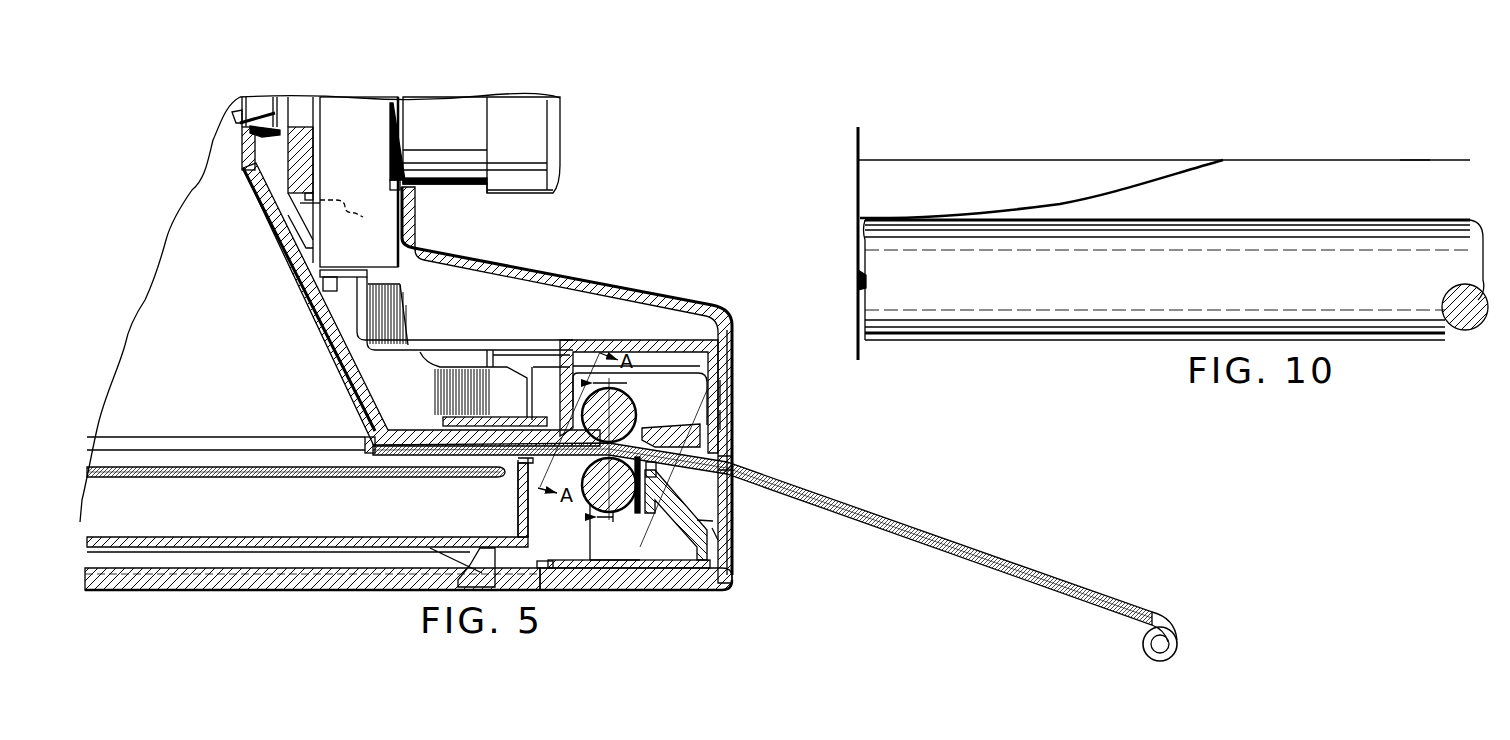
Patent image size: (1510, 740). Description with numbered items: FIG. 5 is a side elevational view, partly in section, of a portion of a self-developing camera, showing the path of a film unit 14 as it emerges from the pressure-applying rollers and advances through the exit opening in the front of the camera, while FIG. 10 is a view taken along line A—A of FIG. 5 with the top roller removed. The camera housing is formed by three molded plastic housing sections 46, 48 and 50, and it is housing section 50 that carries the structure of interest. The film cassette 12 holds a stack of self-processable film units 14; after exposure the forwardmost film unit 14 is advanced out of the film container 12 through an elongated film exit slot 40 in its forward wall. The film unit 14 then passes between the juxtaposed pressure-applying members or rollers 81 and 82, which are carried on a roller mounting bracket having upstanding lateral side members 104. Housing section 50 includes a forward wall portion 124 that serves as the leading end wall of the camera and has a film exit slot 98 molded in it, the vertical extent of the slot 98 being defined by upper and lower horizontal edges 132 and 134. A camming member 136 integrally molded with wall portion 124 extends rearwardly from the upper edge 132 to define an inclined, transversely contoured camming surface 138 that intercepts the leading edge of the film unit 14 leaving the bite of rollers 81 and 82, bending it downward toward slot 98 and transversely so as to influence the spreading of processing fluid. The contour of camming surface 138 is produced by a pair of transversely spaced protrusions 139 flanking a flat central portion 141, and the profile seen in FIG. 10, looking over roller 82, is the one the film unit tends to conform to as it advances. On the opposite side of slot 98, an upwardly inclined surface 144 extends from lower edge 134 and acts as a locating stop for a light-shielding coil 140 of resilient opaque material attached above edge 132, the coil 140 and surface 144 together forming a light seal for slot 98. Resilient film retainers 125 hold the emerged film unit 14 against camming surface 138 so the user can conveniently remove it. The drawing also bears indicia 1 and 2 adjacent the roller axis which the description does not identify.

In FIG. 5, the film cassette 12 is at (532, 538).
In FIG. 5, the film unit 14 is at (322, 480).
In FIG. 5, the film exit slot 40 is at (522, 482).
In FIG. 5, the housing section 46 is at (362, 595).
In FIG. 5, the housing section 48 is at (576, 267).
In FIG. 5, the housing section 50 is at (737, 586).
In FIG. 5, the pressure-applying roller 81 is at (640, 387).
In FIG. 5, the pressure-applying roller 82 is at (590, 494).
In FIG. 10, the pressure-applying roller 82 is at (1295, 222).
In FIG. 5, the film exit slot 98 is at (699, 501).
In FIG. 5, the lateral side member 104 is at (606, 549).
In FIG. 5, the forward wall portion 124 is at (727, 366).
In FIG. 5, the resilient film retainer 125 is at (677, 479).
In FIG. 5, the upper horizontal edge 132 is at (727, 462).
In FIG. 5, the lower horizontal edge 134 is at (722, 532).
In FIG. 5, the camming member 136 is at (630, 449).
In FIG. 5, the camming surface 138 is at (727, 422).
In FIG. 10, the camming surface 138 is at (1416, 164).
In FIG. 5, the protrusion 139 is at (722, 449).
In FIG. 10, the protrusion 139 is at (1150, 168).
In FIG. 5, the coil 140 is at (1180, 641).
In FIG. 5, the flat central portion 141 is at (727, 392).
In FIG. 10, the flat central portion 141 is at (1310, 157).
In FIG. 5, the upwardly inclined surface 144 is at (713, 521).
In FIG. 5, the section line 1 is at (611, 450).
In FIG. 5, the section line 2 is at (688, 405).